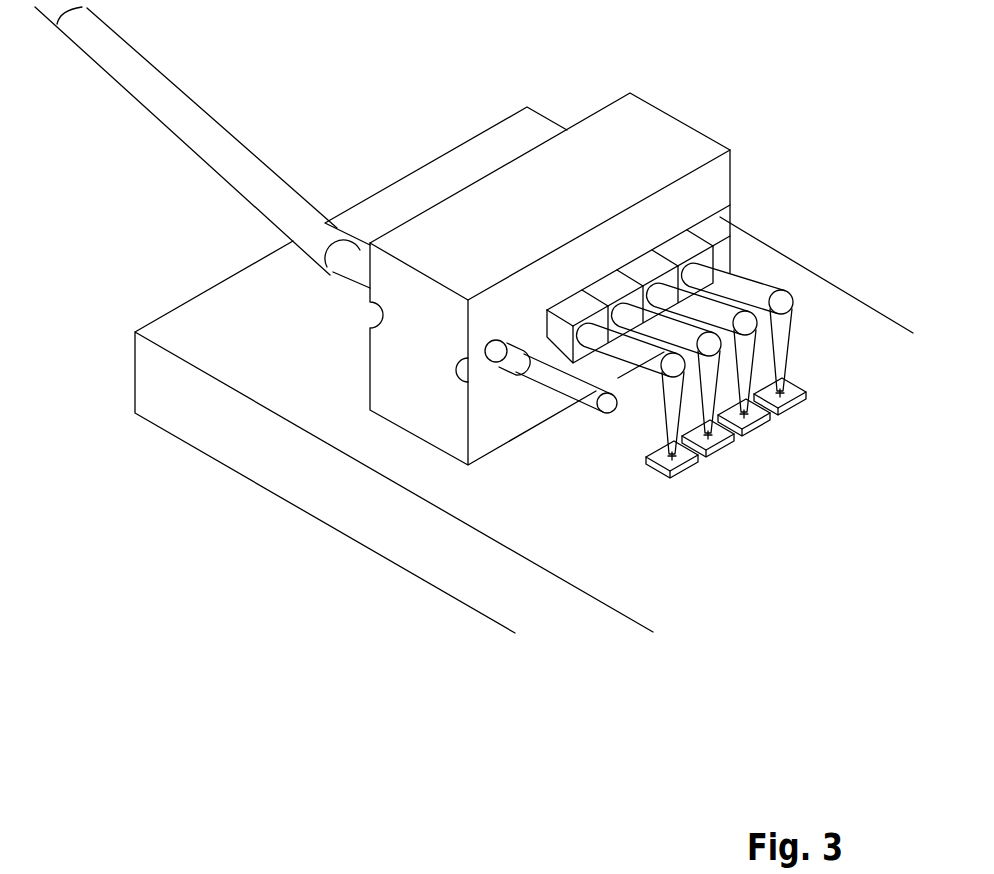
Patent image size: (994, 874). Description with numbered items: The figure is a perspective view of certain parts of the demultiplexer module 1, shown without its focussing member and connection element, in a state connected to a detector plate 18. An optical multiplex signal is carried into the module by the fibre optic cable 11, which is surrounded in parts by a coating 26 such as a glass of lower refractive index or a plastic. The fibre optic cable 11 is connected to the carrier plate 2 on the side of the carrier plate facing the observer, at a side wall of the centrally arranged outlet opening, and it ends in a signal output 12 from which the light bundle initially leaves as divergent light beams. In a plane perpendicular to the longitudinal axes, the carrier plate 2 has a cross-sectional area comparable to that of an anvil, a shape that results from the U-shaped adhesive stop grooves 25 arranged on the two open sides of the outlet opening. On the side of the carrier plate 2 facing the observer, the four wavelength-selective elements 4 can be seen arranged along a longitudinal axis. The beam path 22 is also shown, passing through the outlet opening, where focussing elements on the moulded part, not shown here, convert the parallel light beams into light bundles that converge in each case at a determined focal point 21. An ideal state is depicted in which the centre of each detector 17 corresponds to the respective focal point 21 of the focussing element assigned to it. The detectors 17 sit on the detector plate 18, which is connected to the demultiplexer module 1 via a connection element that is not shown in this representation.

The demultiplexer module 1 is at (708, 96).
The carrier plate 2 is at (547, 190).
The wavelength-selective elements 4 is at (683, 250).
The fibre optic cable 11 is at (353, 267).
The signal output 12 is at (521, 360).
The detector 17 is at (672, 455).
The detector plate 18 is at (815, 313).
The focal point 21 is at (673, 455).
The beam path 22 is at (583, 393).
The adhesive stop grooves 25 is at (473, 370).
The coating 26 is at (167, 115).